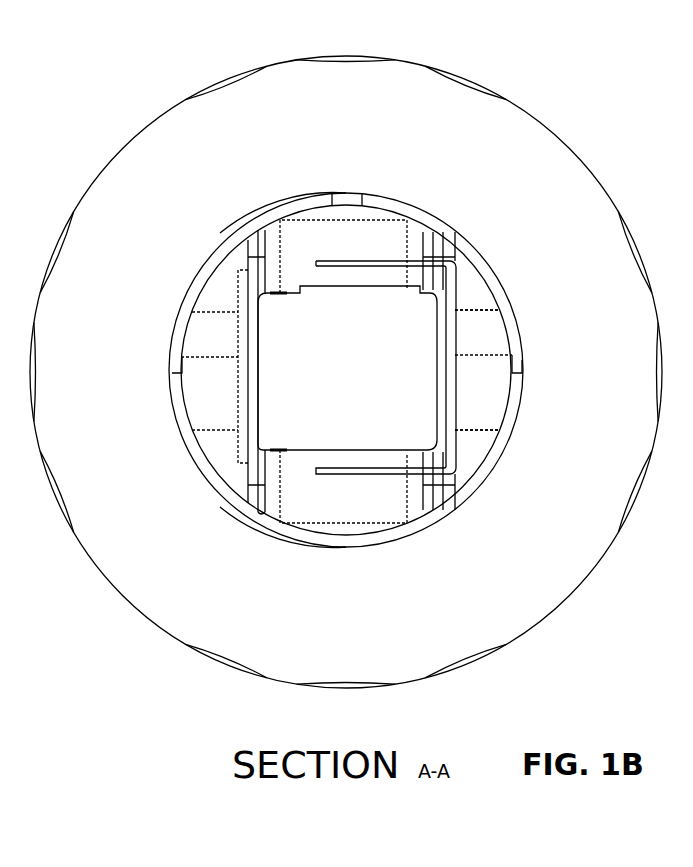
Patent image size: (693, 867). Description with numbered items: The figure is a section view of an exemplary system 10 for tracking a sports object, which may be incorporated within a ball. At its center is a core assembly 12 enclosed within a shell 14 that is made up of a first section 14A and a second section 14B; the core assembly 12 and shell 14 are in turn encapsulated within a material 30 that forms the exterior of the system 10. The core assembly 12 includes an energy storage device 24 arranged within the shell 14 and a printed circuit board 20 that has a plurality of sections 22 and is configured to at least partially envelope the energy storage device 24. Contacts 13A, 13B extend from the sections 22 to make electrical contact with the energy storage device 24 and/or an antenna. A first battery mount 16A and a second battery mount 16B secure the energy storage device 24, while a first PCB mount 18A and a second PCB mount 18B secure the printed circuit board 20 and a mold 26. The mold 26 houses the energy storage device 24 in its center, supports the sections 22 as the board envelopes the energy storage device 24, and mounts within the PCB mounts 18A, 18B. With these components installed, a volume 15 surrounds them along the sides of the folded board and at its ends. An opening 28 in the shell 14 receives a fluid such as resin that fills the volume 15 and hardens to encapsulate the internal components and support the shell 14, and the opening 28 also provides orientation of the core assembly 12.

The system 10 is at (95, 60).
The core assembly 12 is at (248, 183).
The contact 13A is at (335, 262).
The contact 13B is at (392, 473).
The shell 14 is at (165, 334).
The first section 14A is at (217, 250).
The second section 14B is at (213, 490).
The volume 15 is at (482, 390).
The first battery mount 16A is at (281, 245).
The second battery mount 16B is at (281, 500).
The first PCB mount 18A is at (447, 243).
The second PCB mount 18B is at (448, 497).
The printed circuit board 20 is at (462, 284).
The sections 22 is at (238, 398).
The energy storage device 24 is at (347, 368).
The mold 26 is at (247, 350).
The opening 28 is at (364, 190).
The material 30 is at (346, 372).